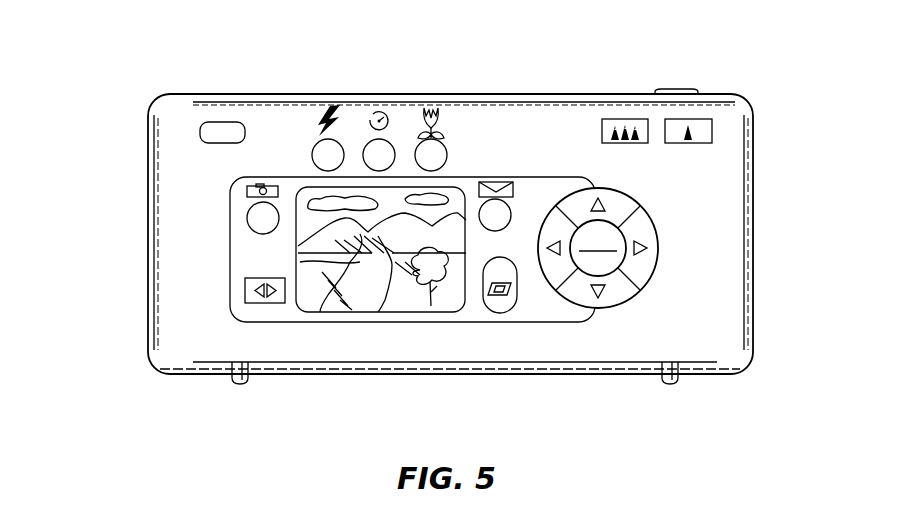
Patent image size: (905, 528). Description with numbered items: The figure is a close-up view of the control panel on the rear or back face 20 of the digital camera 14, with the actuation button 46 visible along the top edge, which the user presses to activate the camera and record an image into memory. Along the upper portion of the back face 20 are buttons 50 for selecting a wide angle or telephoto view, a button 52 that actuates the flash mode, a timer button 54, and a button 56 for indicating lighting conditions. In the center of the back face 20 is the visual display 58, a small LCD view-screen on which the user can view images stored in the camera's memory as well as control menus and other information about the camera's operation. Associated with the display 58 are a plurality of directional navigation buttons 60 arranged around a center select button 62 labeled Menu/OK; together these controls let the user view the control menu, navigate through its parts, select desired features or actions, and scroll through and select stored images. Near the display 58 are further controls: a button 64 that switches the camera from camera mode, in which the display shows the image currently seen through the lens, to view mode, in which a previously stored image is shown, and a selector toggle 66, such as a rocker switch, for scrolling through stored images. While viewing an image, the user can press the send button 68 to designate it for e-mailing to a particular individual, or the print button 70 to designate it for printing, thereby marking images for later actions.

The digital camera 14 is at (108, 292).
The back face 20 is at (727, 278).
The actuation button 46 is at (680, 88).
The buttons for selecting wide angle or telephoto view 50 is at (675, 120).
The flash mode button 52 is at (317, 152).
The timer button 54 is at (367, 150).
The lighting conditions button 56 is at (440, 147).
The visual display 58 is at (397, 297).
The directional navigation buttons 60 is at (630, 203).
The center select button 62 is at (617, 262).
The camera mode/view mode button 64 is at (257, 222).
The selector toggle 66 is at (260, 303).
The send button 68 is at (511, 215).
The print button 70 is at (508, 312).